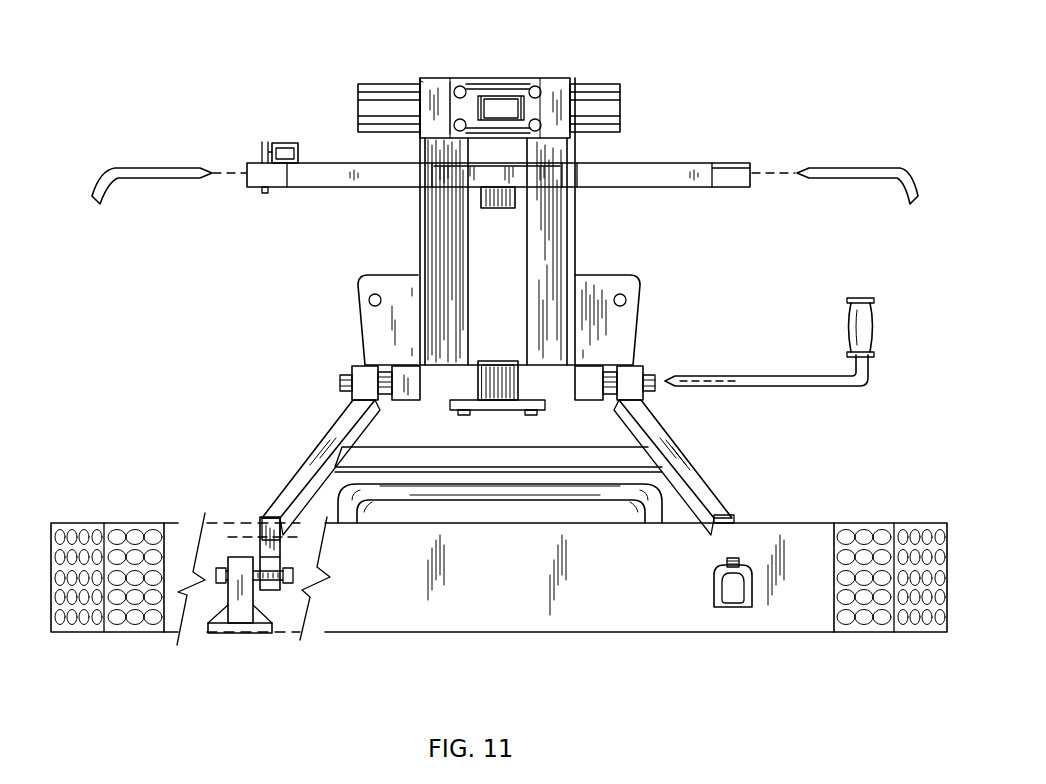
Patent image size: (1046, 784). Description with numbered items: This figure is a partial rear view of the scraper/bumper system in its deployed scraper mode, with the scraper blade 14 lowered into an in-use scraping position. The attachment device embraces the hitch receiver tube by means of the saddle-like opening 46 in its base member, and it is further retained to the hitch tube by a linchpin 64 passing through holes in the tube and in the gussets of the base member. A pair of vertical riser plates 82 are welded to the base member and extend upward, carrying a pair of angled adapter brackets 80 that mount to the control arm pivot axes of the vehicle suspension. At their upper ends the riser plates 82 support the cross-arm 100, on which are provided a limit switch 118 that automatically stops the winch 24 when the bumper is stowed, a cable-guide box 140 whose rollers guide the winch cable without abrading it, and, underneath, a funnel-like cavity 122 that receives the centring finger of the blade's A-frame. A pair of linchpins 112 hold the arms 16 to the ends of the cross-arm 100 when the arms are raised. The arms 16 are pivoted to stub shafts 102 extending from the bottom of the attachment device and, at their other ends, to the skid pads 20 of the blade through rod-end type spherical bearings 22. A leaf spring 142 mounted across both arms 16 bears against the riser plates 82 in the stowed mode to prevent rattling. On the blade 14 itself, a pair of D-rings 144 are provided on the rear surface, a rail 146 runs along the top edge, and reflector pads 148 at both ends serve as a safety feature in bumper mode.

The scraper blade 14 is at (790, 635).
The arms 16 is at (320, 455).
The skid pads 20 is at (236, 634).
The rod-end type spherical bearings 22 is at (284, 592).
The winch 24 is at (598, 84).
The saddle-like opening 46 is at (510, 380).
The linchpin 64 is at (785, 388).
The angled adapter brackets 80 is at (358, 293).
The vertical riser plates 82 is at (420, 227).
The cross-arm 100 is at (640, 165).
The stub shafts 102 is at (340, 382).
The linchpins 112 is at (165, 168).
The limit switch 118 is at (281, 142).
The funnel-like cavity 122 is at (500, 210).
The cable-guide box 140 is at (500, 78).
The leaf spring 142 is at (633, 425).
The D-rings 144 is at (714, 580).
The rail 146 is at (413, 500).
The reflector pads 148 is at (140, 522).